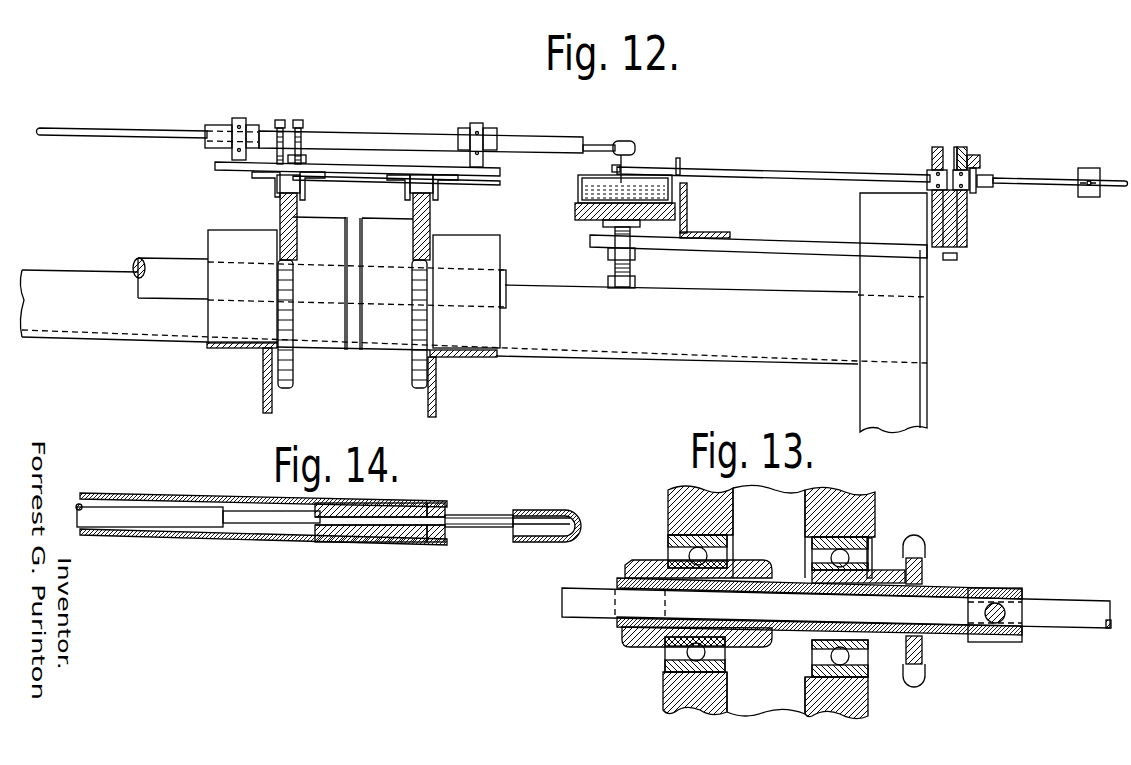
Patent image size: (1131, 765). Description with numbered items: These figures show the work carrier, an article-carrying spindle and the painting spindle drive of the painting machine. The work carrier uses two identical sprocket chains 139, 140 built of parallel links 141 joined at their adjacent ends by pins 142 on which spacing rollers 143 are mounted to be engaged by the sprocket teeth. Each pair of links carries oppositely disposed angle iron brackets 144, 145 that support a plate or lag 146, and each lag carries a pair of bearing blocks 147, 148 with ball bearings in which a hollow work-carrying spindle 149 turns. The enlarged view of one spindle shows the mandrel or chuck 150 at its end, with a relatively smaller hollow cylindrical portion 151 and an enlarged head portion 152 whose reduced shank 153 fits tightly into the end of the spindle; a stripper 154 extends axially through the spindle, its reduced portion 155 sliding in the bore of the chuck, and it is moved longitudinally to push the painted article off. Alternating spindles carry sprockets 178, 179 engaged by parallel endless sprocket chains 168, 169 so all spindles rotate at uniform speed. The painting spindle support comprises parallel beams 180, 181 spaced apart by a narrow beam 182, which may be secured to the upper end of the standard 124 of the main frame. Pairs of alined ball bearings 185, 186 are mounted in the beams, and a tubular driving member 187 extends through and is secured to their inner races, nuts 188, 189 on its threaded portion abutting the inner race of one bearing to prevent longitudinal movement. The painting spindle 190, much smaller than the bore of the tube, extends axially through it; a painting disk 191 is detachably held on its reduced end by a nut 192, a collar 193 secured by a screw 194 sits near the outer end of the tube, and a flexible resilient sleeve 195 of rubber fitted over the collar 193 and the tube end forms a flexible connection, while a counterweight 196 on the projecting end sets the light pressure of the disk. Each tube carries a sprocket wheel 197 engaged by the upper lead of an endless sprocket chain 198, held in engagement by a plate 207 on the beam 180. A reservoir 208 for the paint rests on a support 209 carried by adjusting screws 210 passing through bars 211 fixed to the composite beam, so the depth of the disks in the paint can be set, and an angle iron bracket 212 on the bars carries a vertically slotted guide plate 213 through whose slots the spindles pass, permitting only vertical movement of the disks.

In FIG. 12, the vertical standard 124 is at (927, 332).
In FIG. 12, the sprocket chain 139 is at (434, 177).
In FIG. 12, the sprocket chain 140 is at (300, 165).
In FIG. 12, the parallel links 141 is at (278, 198).
In FIG. 12, the pins 142 is at (275, 188).
In FIG. 12, the spacing rollers 143 is at (278, 195).
In FIG. 12, the angle iron bracket 144 is at (253, 176).
In FIG. 12, the angle iron bracket 145 is at (387, 178).
In FIG. 12, the plate or lag 146 is at (362, 176).
In FIG. 12, the bearing block 147 is at (480, 124).
In FIG. 12, the bearing block 148 is at (238, 118).
In FIG. 12, the hollow work-carrying spindle 149 is at (378, 134).
In FIG. 14, the hollow work-carrying spindle 149 is at (177, 495).
In FIG. 12, the mandrel or chuck 150 is at (624, 148).
In FIG. 14, the mandrel or chuck 150 is at (542, 542).
In FIG. 12, the hollow cylindrical portion 151 is at (599, 148).
In FIG. 14, the hollow cylindrical portion 151 is at (478, 530).
In FIG. 14, the enlarged head portion 152 is at (432, 545).
In FIG. 14, the reduced shank 153 is at (365, 540).
In FIG. 14, the stripper 154 is at (148, 517).
In FIG. 14, the reduced portion 155 is at (262, 518).
In FIG. 12, the endless sprocket chain 168 is at (280, 119).
In FIG. 12, the endless sprocket chain 169 is at (298, 119).
In FIG. 12, the sprocket 178 is at (307, 150).
In FIG. 12, the sprocket 179 is at (218, 158).
In FIG. 12, the beam 180 is at (965, 150).
In FIG. 13, the beam 180 is at (865, 510).
In FIG. 12, the beam 181 is at (938, 147).
In FIG. 13, the beam 181 is at (673, 510).
In FIG. 12, the narrow beam 182 is at (967, 207).
In FIG. 12, the ball bearing 185 is at (960, 147).
In FIG. 13, the ball bearing 185 is at (872, 542).
In FIG. 12, the ball bearing 186 is at (933, 170).
In FIG. 13, the ball bearing 186 is at (672, 547).
In FIG. 13, the tubular driving member 187 is at (882, 573).
In FIG. 13, the nut 188 is at (747, 572).
In FIG. 13, the nut 189 is at (630, 645).
In FIG. 12, the painting spindle 190 is at (797, 172).
In FIG. 13, the painting spindle 190 is at (593, 607).
In FIG. 12, the painting disk 191 is at (612, 158).
In FIG. 12, the nut 192 is at (612, 168).
In FIG. 13, the collar 193 is at (978, 588).
In FIG. 13, the screw 194 is at (1000, 603).
In FIG. 13, the flexible resilient sleeve 195 is at (952, 583).
In FIG. 12, the counterweight 196 is at (1090, 172).
In FIG. 12, the sprocket wheel 197 is at (1007, 187).
In FIG. 13, the sprocket wheel 197 is at (925, 558).
In FIG. 12, the endless sprocket chain 198 is at (980, 173).
In FIG. 12, the plate 207 is at (980, 158).
In FIG. 12, the reservoir 208 is at (668, 181).
In FIG. 12, the support 209 is at (583, 224).
In FIG. 12, the adjusting screw 210 is at (631, 264).
In FIG. 12, the bar 211 is at (693, 245).
In FIG. 12, the angle iron bracket 212 is at (700, 234).
In FIG. 12, the vertically slotted guide plate 213 is at (683, 183).